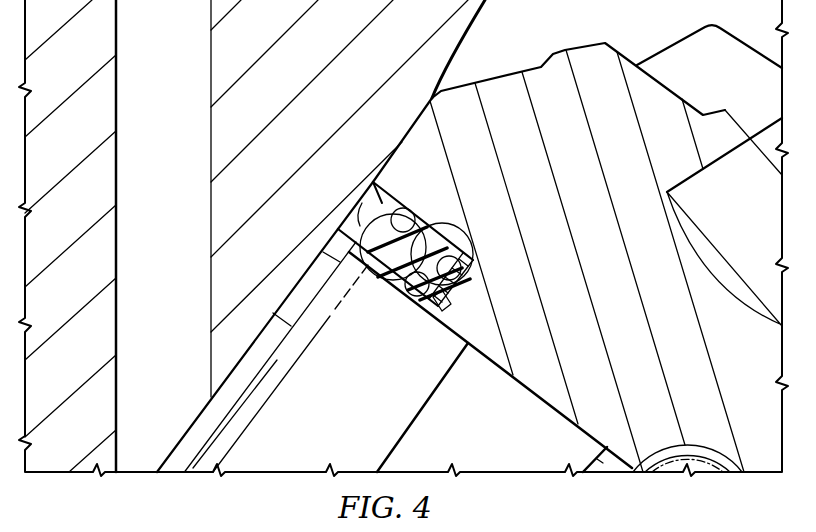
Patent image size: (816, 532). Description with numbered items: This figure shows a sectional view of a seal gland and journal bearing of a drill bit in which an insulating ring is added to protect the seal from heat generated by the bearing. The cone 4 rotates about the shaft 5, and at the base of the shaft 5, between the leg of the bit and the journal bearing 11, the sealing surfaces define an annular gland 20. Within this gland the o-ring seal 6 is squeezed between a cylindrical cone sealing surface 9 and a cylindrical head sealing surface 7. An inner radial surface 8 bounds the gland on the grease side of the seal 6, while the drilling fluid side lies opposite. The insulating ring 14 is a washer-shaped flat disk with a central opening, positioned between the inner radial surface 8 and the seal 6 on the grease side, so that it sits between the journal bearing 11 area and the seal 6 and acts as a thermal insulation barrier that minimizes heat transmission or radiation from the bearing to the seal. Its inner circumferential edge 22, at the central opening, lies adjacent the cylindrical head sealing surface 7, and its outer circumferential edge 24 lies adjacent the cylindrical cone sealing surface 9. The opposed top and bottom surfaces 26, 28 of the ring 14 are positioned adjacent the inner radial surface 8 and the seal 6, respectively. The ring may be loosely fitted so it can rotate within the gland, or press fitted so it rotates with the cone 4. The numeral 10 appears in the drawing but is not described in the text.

The cone 4 is at (599, 285).
The shaft 5 is at (315, 407).
The o-ring seal 6 is at (362, 202).
The cylindrical head sealing surface 7 is at (420, 305).
The inner radial surface 8 is at (453, 258).
The cylindrical cone sealing surface 9 is at (400, 207).
The screw body 10 is at (370, 283).
The journal bearing 11 is at (548, 385).
The insulating ring 14 is at (455, 306).
The annular gland 20 is at (457, 215).
The inner circumferential edge 22 is at (438, 322).
The outer circumferential edge 24 is at (480, 263).
The top surface 26 is at (478, 272).
The bottom surface 28 is at (437, 240).